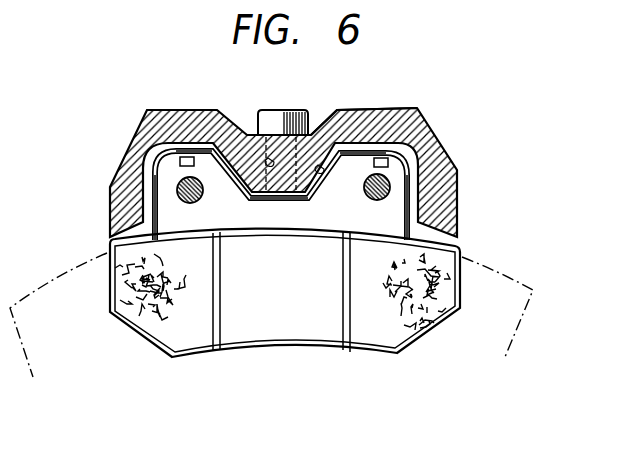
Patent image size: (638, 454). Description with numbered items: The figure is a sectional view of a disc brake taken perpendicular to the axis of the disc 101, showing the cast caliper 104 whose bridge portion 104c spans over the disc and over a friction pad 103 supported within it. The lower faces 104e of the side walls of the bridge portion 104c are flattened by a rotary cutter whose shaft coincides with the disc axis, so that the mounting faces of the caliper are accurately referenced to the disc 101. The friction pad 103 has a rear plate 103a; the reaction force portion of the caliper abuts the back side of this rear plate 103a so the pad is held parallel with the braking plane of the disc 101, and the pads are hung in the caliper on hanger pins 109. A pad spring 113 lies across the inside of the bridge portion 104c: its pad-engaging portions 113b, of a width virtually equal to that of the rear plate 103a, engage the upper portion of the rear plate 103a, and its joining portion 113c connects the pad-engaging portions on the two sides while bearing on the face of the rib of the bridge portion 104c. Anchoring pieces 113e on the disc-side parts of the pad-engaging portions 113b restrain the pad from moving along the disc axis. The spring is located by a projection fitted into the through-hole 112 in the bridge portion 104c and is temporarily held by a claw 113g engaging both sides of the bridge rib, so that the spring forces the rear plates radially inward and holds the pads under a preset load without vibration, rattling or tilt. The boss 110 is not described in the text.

The disc 101 is at (508, 282).
The friction pad 103 is at (375, 359).
The rear plate 103a is at (422, 203).
The caliper 104 is at (437, 127).
The bridge portion 104c is at (338, 112).
The lower faces of the side walls of the bridge portion 104e is at (268, 201).
The hanger pins 109 is at (186, 203).
The boss 110 is at (278, 112).
The through-hole 112 is at (256, 172).
The pad spring 113 is at (317, 201).
The pad-engaging portions 113b is at (207, 150).
The joining portion 113c is at (288, 201).
The anchoring pieces 113e is at (181, 156).
The claw 113g is at (243, 201).